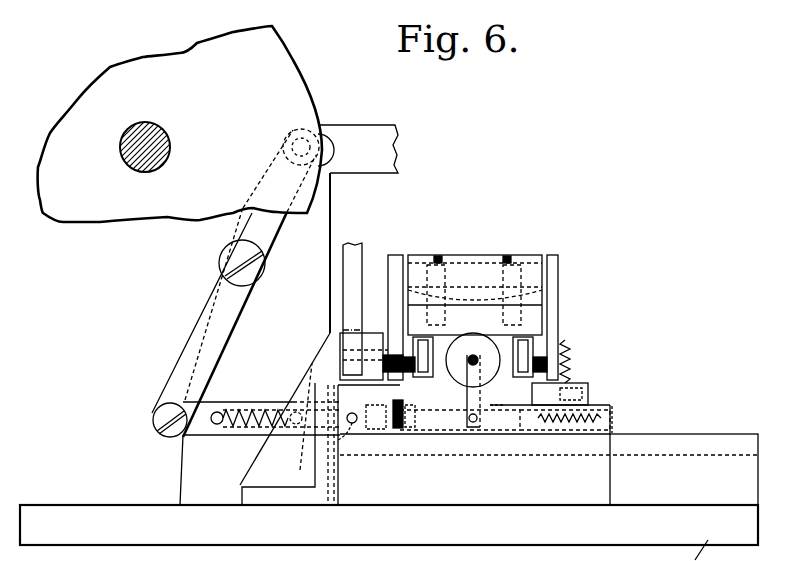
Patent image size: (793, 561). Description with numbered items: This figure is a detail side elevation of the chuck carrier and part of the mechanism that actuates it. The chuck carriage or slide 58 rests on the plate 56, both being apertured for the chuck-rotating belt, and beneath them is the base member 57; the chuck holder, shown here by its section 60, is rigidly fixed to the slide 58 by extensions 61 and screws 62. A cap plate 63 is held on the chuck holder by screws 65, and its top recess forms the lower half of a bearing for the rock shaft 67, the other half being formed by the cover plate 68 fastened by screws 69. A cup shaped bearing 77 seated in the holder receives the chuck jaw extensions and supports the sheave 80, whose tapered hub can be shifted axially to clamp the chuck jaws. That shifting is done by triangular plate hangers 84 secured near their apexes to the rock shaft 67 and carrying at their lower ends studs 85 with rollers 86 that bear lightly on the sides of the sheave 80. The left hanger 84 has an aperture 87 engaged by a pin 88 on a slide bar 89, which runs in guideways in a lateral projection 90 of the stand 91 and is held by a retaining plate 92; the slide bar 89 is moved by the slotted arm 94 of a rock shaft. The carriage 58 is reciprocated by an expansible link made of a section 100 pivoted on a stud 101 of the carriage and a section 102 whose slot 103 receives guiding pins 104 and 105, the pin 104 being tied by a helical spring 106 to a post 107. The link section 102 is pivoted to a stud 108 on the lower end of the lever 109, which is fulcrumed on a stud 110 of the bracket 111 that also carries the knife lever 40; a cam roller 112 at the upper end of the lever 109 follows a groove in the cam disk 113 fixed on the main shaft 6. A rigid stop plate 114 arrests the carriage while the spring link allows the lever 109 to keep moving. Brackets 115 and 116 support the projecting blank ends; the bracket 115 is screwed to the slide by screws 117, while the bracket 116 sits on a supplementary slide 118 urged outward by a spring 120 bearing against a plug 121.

The main shaft 6 is at (163, 133).
The lever 40 is at (380, 130).
The plate 56 is at (688, 433).
The base plate 57 is at (715, 433).
The slide 58 is at (612, 404).
The chuck holder section 60 is at (566, 372).
The extension 61 is at (368, 392).
The screw 62 is at (576, 392).
The cap plate 63 is at (535, 281).
The screw 65 is at (408, 291).
The rock shaft 67 is at (466, 262).
The cover plate 68 is at (459, 262).
The screw 69 is at (437, 258).
The cup shaped bearing 77 is at (471, 336).
The sheave 80 is at (458, 278).
The triangular plate hanger 84 is at (394, 255).
The stud 85 is at (541, 357).
The roller 86 is at (426, 348).
The aperture 87 is at (425, 416).
The pin 88 is at (400, 340).
The slide bar 89 is at (348, 345).
The lateral projection 90 is at (363, 333).
The stand 91 is at (307, 466).
The retaining plate 92 is at (408, 414).
The arm 94 is at (345, 279).
The link section 100 is at (356, 421).
The stud 101 is at (395, 426).
The link section 102 is at (214, 436).
The slot 103 is at (259, 410).
The guiding pin 104 is at (306, 382).
The guiding pin 105 is at (248, 428).
The helical spring 106 is at (264, 427).
The post 107 is at (218, 412).
The stud 108 is at (166, 431).
The lever 109 is at (192, 333).
The stud 110 is at (225, 258).
The bracket 111 is at (320, 218).
The cam roller 112 is at (306, 120).
The cam disk 113 is at (300, 85).
The stop plate 114 is at (336, 488).
The bracket 115 is at (467, 388).
The bracket 116 is at (530, 368).
The screw 117 is at (477, 422).
The supplementary slide 118 is at (540, 430).
The spring 120 is at (612, 418).
The plug 121 is at (618, 402).